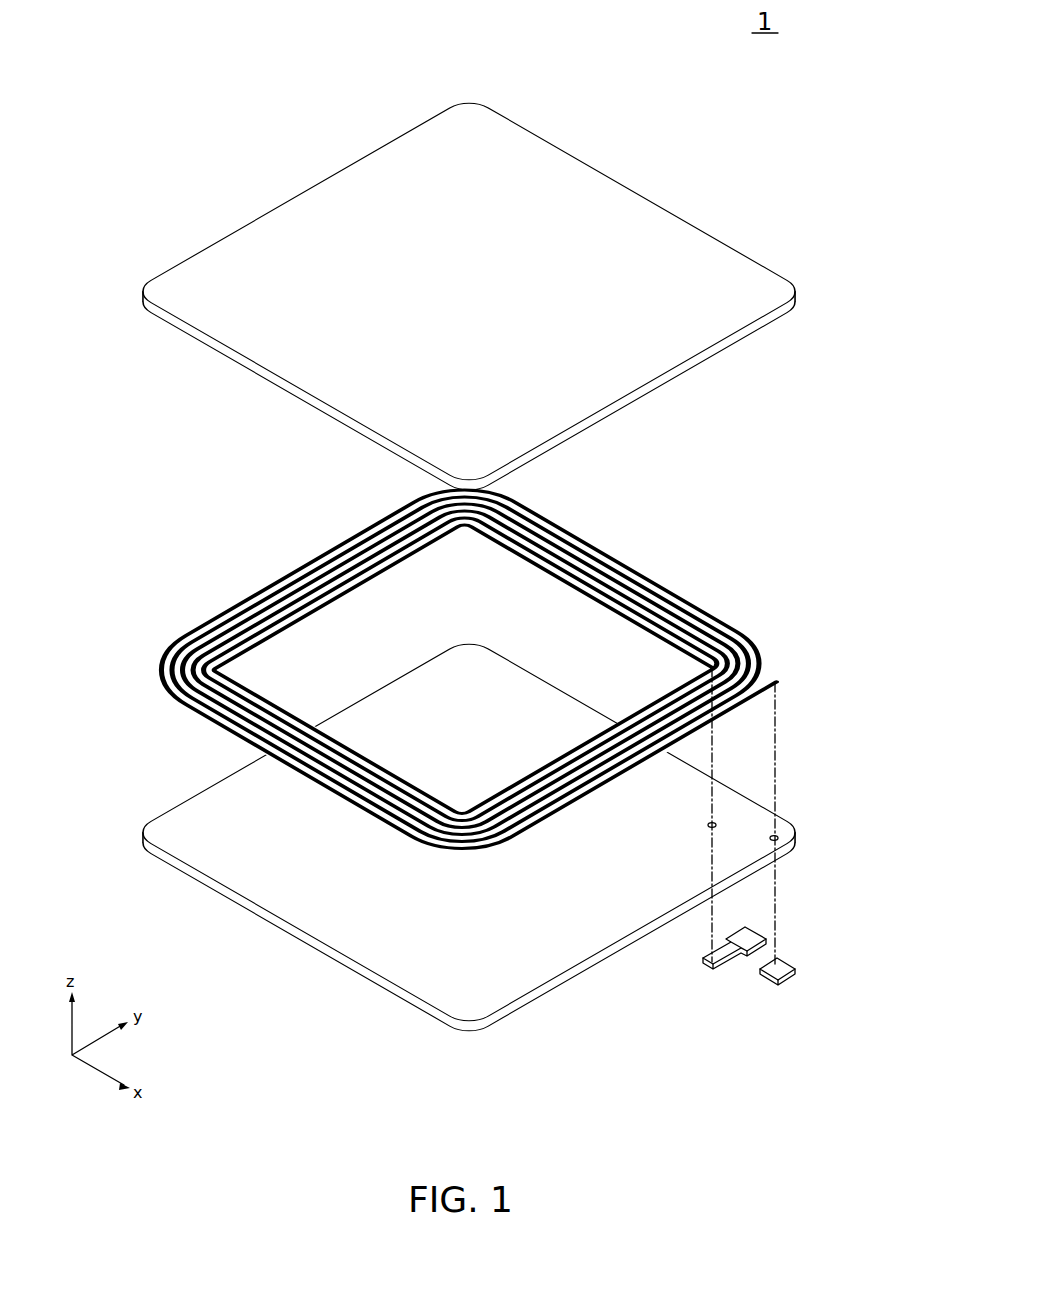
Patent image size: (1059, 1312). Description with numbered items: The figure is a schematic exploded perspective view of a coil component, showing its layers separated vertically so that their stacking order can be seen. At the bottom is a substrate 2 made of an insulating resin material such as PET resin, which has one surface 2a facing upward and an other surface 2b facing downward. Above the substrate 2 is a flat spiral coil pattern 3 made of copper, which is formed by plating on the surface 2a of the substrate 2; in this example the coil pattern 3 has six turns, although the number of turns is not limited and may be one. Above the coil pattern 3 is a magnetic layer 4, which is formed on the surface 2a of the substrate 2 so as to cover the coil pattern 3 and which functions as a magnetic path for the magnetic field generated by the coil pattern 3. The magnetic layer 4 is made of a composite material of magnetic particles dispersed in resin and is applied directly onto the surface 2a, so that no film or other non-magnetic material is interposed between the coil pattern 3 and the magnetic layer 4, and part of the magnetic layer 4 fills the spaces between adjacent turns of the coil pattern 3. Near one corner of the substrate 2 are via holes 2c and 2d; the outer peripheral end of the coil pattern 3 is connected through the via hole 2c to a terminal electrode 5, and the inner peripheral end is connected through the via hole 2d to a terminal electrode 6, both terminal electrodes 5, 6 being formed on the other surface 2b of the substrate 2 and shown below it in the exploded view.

The substrate 2 is at (485, 837).
The one surface of the substrate 2a is at (469, 832).
The other surface of the substrate 2b is at (469, 840).
The via hole 2c is at (779, 835).
The via hole 2d is at (708, 823).
The coil pattern 3 is at (658, 587).
The magnetic layer 4 is at (731, 247).
The terminal electrode 5 is at (778, 960).
The terminal electrode 6 is at (748, 930).